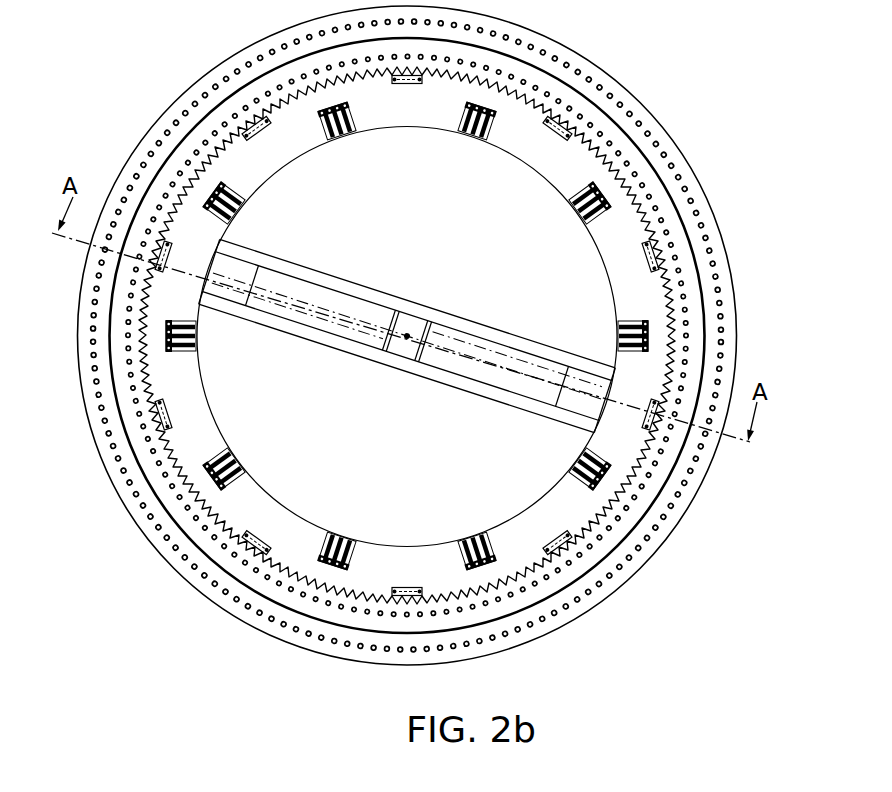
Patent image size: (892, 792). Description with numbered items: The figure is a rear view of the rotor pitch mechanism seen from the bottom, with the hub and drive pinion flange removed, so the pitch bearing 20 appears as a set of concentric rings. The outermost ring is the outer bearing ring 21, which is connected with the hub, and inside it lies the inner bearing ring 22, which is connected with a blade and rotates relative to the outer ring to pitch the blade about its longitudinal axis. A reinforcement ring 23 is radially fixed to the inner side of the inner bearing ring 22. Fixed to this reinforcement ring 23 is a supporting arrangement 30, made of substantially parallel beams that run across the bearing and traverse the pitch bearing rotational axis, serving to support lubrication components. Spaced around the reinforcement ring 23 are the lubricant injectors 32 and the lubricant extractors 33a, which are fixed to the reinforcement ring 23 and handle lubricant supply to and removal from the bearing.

The pitch bearing 20 is at (704, 104).
The outer bearing ring 21 is at (265, 66).
The inner bearing ring 22 is at (190, 152).
The reinforcement ring 23 is at (527, 147).
The supporting arrangement 30 is at (458, 406).
The lubricant injectors 32 is at (217, 478).
The lubricant extractors 33a is at (247, 551).